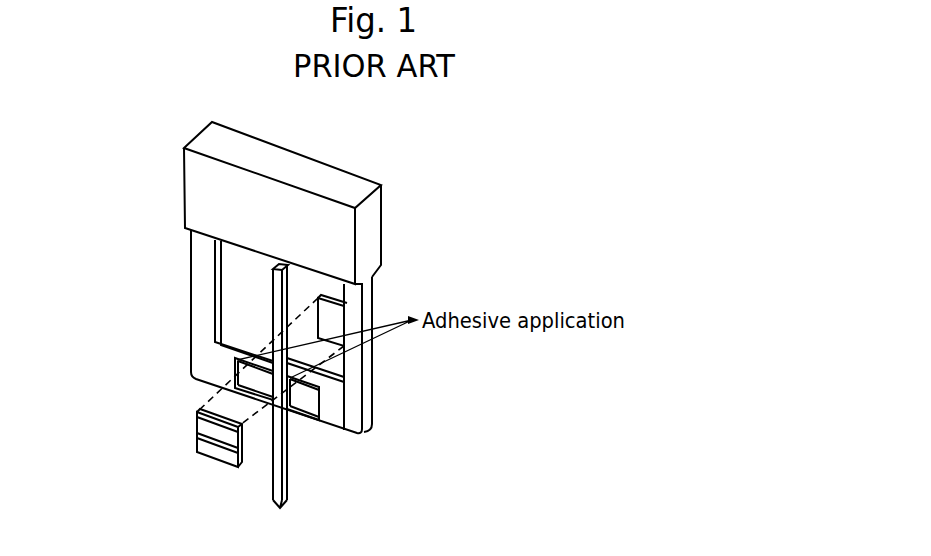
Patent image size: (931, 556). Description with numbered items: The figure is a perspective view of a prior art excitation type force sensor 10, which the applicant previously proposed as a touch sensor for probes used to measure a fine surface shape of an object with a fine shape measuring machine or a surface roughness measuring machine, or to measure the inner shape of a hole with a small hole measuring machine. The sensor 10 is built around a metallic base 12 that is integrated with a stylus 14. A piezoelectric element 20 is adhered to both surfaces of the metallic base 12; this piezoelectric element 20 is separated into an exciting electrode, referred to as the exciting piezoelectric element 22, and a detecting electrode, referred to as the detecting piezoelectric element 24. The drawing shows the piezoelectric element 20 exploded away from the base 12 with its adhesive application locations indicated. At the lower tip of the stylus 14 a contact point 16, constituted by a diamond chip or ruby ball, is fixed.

The force sensor 10 is at (419, 167).
The metallic base 12 is at (352, 410).
The stylus 14 is at (287, 469).
The contact point 16 is at (280, 508).
The piezoelectric element 20 is at (330, 298).
The exciting piezoelectric element 22 is at (193, 420).
The detecting piezoelectric element 24 is at (193, 442).